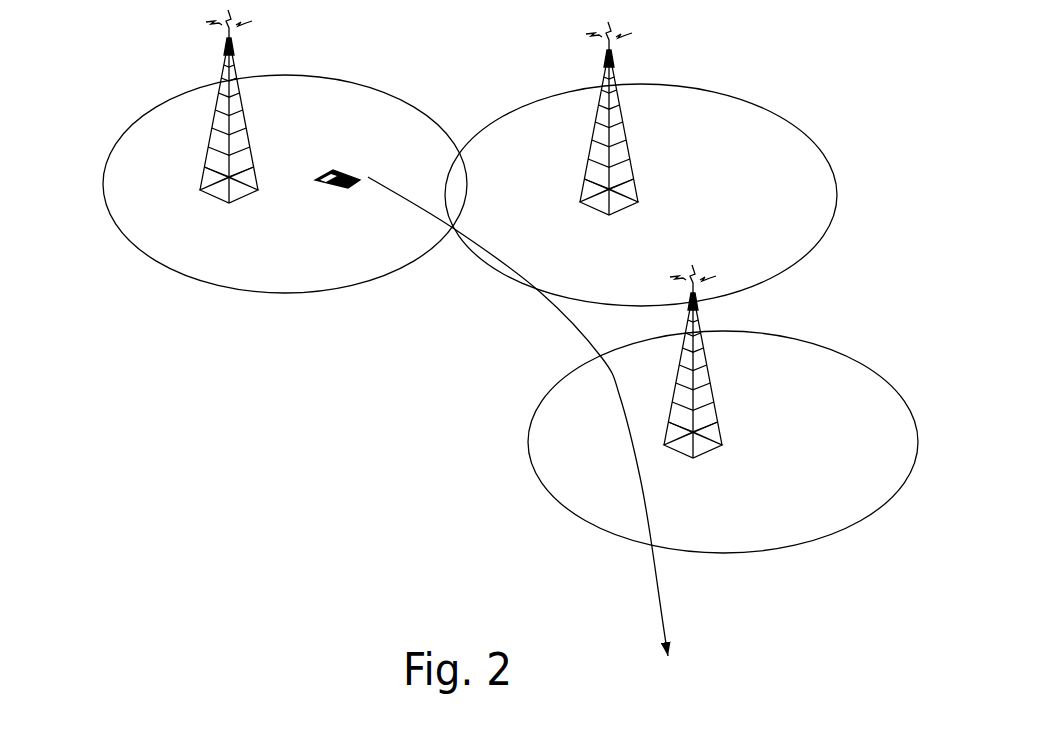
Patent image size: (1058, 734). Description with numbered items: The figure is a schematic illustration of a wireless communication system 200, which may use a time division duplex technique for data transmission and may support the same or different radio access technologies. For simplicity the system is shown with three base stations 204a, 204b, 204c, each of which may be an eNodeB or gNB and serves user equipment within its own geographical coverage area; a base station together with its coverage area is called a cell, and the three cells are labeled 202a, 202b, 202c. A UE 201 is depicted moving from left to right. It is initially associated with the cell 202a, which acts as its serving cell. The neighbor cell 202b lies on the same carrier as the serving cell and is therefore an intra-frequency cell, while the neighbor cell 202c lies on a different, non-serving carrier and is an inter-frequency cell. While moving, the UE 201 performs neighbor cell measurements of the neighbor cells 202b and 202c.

The wireless communication system 200 is at (786, 52).
The UE 201 is at (352, 190).
The cell 202a is at (86, 289).
The neighbor cell 202b is at (497, 301).
The neighbor cell 202c is at (559, 534).
The base station 204a is at (220, 197).
The base station 204b is at (630, 206).
The base station 204c is at (706, 456).